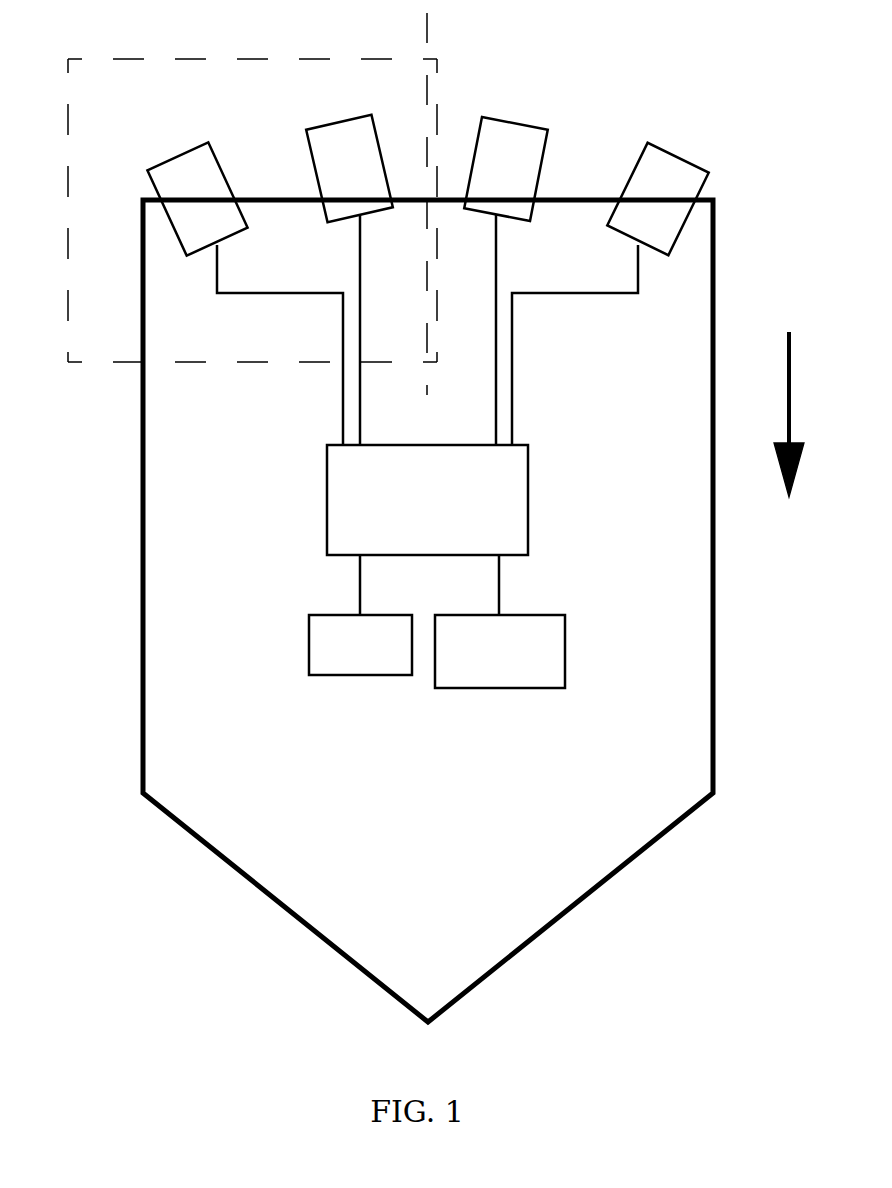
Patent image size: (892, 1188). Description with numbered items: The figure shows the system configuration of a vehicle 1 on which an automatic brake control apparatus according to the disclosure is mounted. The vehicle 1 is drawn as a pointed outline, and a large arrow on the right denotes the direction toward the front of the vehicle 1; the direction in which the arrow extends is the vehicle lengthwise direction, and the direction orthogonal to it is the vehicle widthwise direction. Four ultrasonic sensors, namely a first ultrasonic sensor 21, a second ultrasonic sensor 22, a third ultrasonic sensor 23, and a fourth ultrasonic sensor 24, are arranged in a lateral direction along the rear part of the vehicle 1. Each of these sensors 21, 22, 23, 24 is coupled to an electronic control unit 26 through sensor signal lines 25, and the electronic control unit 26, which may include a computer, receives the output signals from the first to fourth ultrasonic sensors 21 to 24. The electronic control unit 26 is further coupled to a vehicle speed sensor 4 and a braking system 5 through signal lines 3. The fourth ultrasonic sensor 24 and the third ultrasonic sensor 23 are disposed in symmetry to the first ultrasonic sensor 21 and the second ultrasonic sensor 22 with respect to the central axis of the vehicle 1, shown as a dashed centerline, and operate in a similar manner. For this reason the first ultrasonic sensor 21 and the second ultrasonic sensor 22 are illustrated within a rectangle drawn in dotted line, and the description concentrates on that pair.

The vehicle 1 is at (120, 439).
The first ultrasonic sensor 21 is at (197, 198).
The second ultrasonic sensor 22 is at (349, 169).
The third ultrasonic sensor 23 is at (506, 169).
The fourth ultrasonic sensor 24 is at (657, 199).
The sensor signal lines 25 is at (427, 330).
The electronic control unit (ECU) 26 is at (427, 500).
The signal lines 3 is at (441, 585).
The vehicle speed sensor 4 is at (360, 645).
The braking system 5 is at (500, 651).